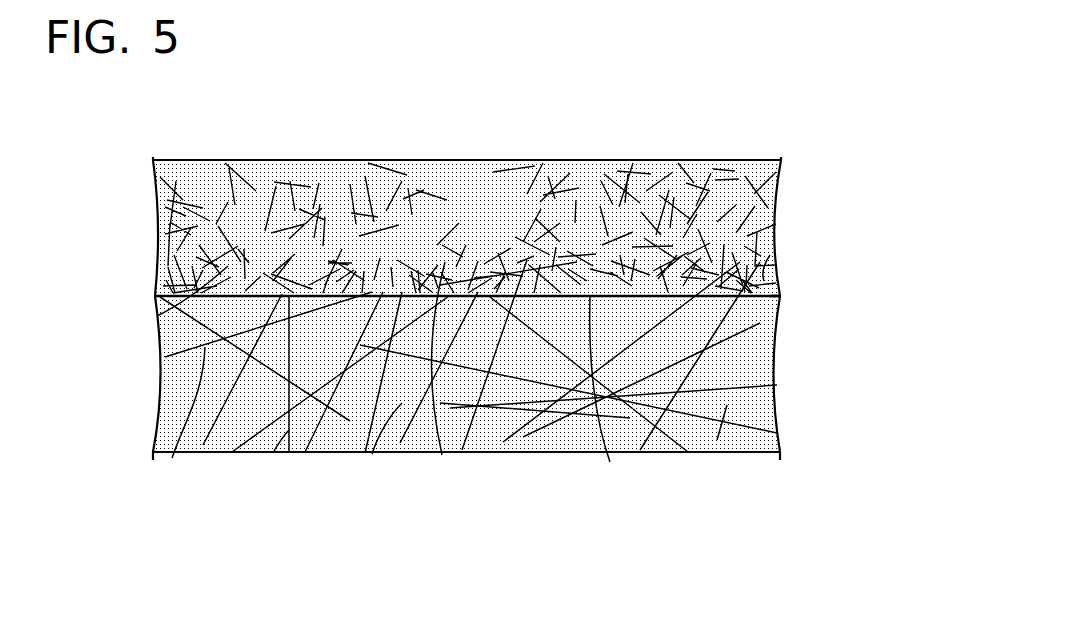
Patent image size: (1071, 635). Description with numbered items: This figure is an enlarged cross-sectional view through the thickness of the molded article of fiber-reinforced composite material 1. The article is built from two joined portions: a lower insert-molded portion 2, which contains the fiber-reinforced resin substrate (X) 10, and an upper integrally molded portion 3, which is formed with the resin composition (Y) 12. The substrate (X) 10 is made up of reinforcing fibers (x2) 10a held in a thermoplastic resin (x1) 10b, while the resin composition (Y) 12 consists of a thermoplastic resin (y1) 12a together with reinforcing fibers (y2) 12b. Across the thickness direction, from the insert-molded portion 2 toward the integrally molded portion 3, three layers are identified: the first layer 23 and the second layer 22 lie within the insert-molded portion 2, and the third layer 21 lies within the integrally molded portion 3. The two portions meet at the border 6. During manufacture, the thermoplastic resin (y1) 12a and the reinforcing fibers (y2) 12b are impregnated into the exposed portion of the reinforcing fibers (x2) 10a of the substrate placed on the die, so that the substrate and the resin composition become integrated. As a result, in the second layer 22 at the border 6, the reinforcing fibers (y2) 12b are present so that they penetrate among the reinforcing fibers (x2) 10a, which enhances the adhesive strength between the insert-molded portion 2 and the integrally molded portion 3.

The molded article of fiber-reinforced composite material 1 is at (740, 97).
The insert-molded portion 2 is at (792, 452).
The integrally molded portion 3 is at (795, 162).
The border 6 is at (812, 263).
The fiber-reinforced resin substrate (X) 10 is at (539, 455).
The reinforcing fibers (x2) 10a is at (173, 455).
The thermoplastic resin (x1) 10b is at (370, 453).
The resin composition (Y) 12 is at (556, 160).
The thermoplastic resin (y1) 12a is at (408, 188).
The reinforcing fibers (y2) 12b is at (157, 316).
The third layer 21 is at (143, 160).
The second layer 22 is at (143, 259).
The first layer 23 is at (143, 299).